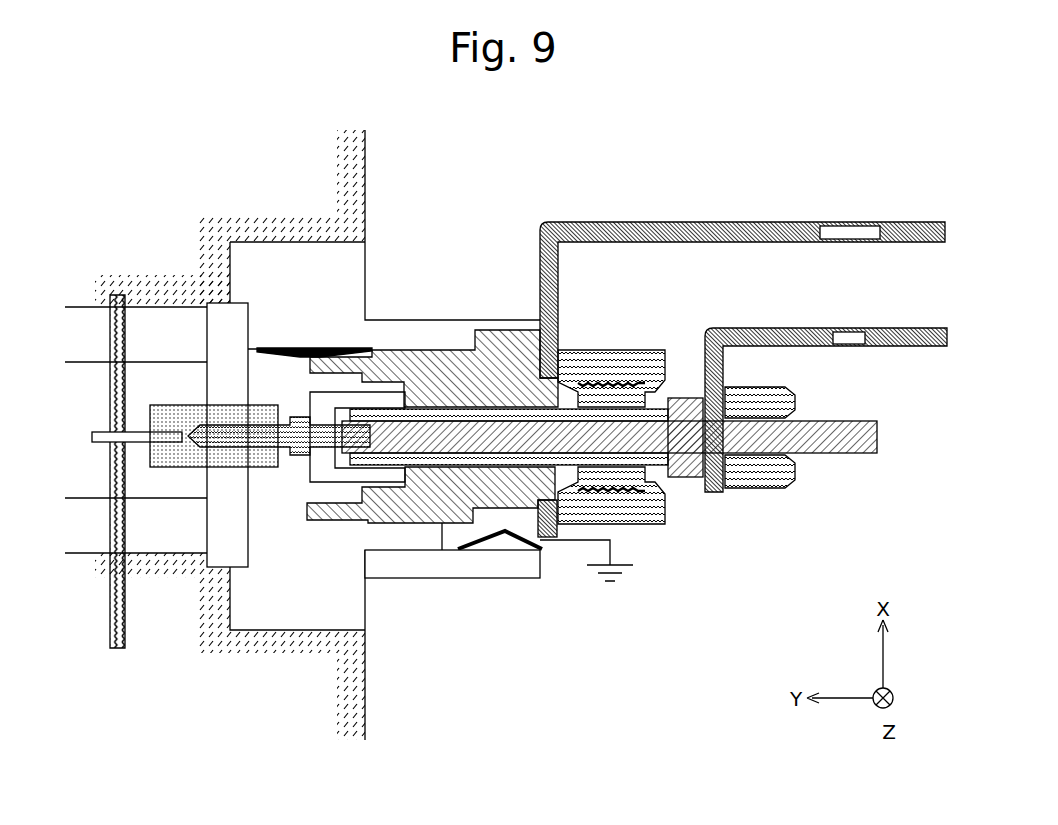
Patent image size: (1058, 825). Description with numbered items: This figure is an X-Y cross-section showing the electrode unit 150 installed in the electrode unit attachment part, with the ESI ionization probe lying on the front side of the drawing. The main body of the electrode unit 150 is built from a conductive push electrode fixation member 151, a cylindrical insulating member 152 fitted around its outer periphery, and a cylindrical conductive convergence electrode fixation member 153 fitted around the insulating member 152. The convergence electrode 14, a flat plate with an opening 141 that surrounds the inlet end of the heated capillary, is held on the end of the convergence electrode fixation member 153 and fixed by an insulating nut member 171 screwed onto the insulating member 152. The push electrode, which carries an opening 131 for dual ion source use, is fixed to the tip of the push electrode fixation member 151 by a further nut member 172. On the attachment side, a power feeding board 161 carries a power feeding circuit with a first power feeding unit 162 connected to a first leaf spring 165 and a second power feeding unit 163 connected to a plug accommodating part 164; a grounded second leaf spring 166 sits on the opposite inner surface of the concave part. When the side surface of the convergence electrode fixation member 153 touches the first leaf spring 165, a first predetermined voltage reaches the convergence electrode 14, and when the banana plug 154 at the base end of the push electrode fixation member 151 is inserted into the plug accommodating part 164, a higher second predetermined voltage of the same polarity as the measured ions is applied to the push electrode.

The convergence electrode 14 is at (742, 274).
The opening 131 is at (857, 334).
The opening 141 is at (853, 227).
The electrode unit 150 is at (743, 305).
The push electrode fixation member 151 is at (802, 460).
The insulating member 152 is at (658, 484).
The convergence electrode fixation member 153 is at (395, 348).
The banana plug 154 is at (284, 424).
The power feeding board 161 is at (125, 590).
The first power feeding unit 162 is at (113, 367).
The second power feeding unit 163 is at (113, 447).
The plug accommodating part 164 is at (260, 468).
The first leaf spring 165 is at (262, 346).
The second leaf spring 166 is at (484, 548).
The nut member 171 is at (622, 349).
The nut member 172 is at (763, 489).